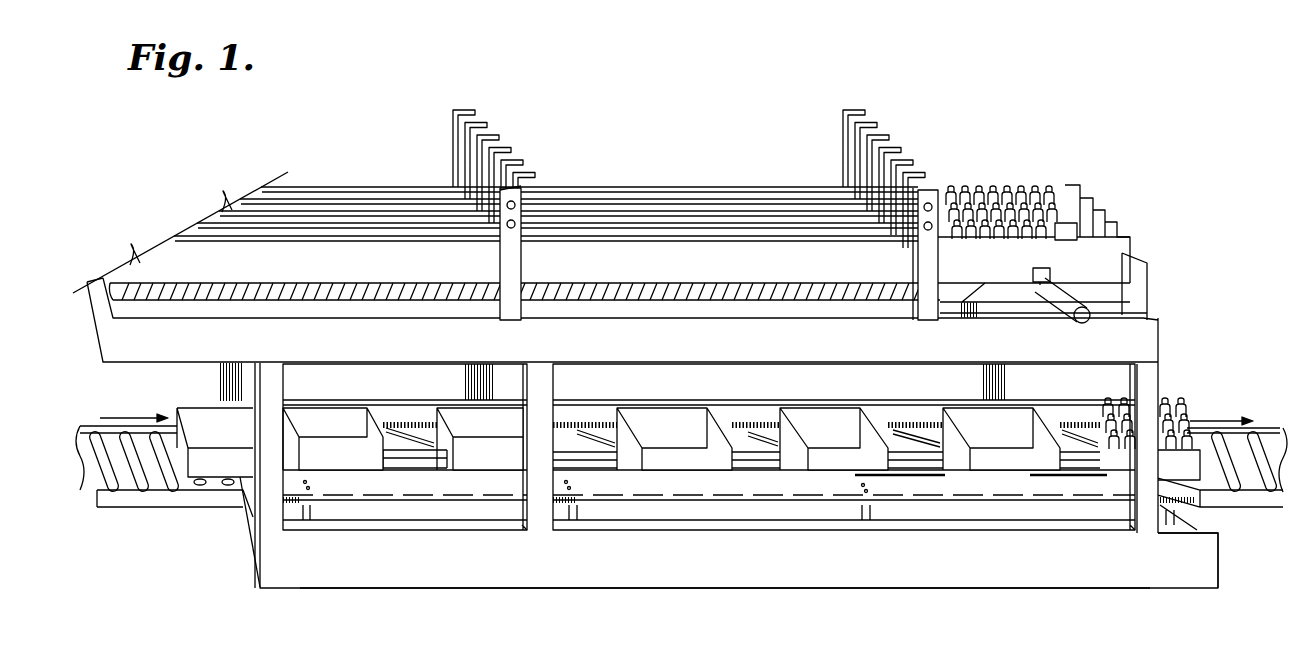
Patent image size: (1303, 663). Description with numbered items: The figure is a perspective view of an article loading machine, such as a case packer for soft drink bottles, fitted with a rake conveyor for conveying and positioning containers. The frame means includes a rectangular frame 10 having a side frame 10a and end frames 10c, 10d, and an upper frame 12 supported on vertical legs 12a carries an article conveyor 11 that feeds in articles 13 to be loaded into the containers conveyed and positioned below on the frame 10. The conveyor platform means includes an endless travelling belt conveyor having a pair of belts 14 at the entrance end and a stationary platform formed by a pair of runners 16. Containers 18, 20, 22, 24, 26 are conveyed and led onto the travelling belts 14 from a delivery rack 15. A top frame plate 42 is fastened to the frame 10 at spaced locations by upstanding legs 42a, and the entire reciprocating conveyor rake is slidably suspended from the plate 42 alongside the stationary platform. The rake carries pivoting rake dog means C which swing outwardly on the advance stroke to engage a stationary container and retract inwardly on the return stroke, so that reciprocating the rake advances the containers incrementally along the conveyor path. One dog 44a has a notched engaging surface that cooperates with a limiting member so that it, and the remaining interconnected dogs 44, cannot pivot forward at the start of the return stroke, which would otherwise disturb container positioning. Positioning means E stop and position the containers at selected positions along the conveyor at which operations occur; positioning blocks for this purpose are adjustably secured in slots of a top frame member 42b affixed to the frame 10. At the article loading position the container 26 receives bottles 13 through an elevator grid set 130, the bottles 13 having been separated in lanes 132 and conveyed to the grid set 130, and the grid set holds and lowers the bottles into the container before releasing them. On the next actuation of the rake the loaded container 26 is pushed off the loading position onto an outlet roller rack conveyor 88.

The rectangular frame 10 is at (463, 588).
The side frame 10a is at (690, 582).
The end frame 10c is at (252, 537).
The end frame 10d is at (1219, 555).
The article conveyor 11 is at (366, 262).
The upper frame 12 is at (95, 332).
The vertical legs 12a is at (550, 394).
The articles 13 is at (1003, 188).
The travelling belts 14 is at (405, 425).
The delivery rack 15 is at (143, 506).
The runners 16 is at (906, 450).
The container 18 is at (342, 434).
The container 20 is at (506, 434).
The container 22 is at (682, 434).
The container 24 is at (843, 434).
The container 26 is at (1017, 434).
The top frame plate 42 is at (727, 383).
The upstanding legs 42a is at (583, 510).
The top frame member 42b is at (733, 487).
The dogs 44 is at (942, 442).
The dog 44a is at (763, 445).
The roller rack conveyor 88 is at (1265, 430).
The elevator grid set 130 is at (1000, 297).
The lanes 132 is at (737, 168).
The pivoting rake dog means C is at (1074, 425).
The positioning means E is at (1070, 462).